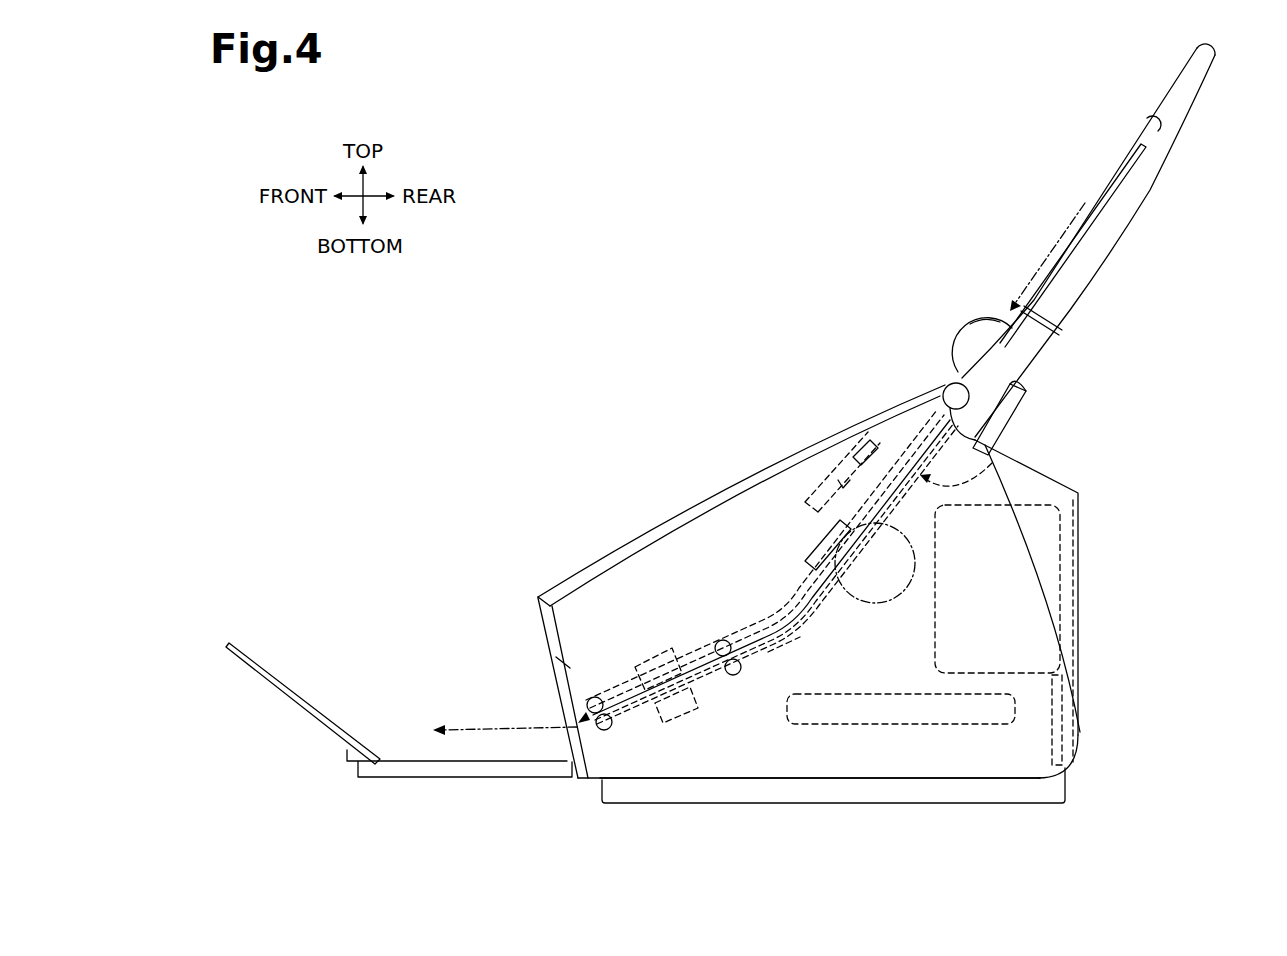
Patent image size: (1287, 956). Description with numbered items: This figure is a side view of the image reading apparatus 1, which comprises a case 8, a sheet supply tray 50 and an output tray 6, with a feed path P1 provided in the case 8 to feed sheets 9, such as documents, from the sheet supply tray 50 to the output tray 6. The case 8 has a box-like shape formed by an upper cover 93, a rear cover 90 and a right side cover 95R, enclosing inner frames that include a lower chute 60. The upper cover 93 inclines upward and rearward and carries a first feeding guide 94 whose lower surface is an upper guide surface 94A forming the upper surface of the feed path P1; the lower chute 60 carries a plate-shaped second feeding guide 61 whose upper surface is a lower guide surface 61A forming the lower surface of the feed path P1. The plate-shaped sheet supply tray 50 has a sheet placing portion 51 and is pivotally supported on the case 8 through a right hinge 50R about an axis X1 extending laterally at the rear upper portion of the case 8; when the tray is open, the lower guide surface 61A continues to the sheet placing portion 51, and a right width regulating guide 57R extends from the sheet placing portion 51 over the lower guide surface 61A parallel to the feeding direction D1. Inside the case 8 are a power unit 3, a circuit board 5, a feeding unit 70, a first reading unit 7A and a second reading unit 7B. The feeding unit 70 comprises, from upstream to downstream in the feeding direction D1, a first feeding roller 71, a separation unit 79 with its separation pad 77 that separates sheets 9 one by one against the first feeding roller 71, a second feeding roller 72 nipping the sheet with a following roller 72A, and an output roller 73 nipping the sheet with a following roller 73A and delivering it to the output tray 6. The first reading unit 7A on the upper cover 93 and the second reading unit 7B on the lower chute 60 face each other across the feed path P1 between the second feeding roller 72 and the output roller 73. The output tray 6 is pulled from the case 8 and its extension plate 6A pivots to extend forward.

The image reading apparatus 1 is at (589, 319).
The power unit 3 is at (997, 589).
The circuit board 5 is at (901, 709).
The output tray 6 is at (398, 782).
The extension plate 6A is at (313, 703).
The first reading unit 7A is at (661, 662).
The second reading unit 7B is at (683, 714).
The case 8 is at (1084, 732).
The sheets 9 is at (1112, 165).
The sheet supply tray 50 is at (1165, 170).
The right hinge 50R is at (947, 350).
The sheet placing portion 51 is at (1165, 100).
The right width regulating guide 57R is at (981, 328).
The lower chute 60 is at (997, 467).
The second feeding guide 61 is at (813, 633).
The lower guide surface 61A is at (790, 605).
The feeding unit 70 is at (719, 739).
The first feeding roller 71 is at (875, 563).
The second feeding roller 72 is at (737, 676).
The following roller 72A is at (726, 640).
The output roller 73 is at (610, 730).
The following roller 73A is at (596, 697).
The separation pad 77 is at (813, 505).
The separation unit 79 is at (853, 458).
The rear cover 90 is at (1081, 562).
The upper cover 93 is at (647, 527).
The first feeding guide 94 is at (755, 590).
The upper guide surface 94A is at (780, 645).
The right side cover 95R is at (862, 758).
The feeding direction D1 is at (1047, 257).
The feed path P1 is at (618, 690).
The axis X1 is at (937, 390).